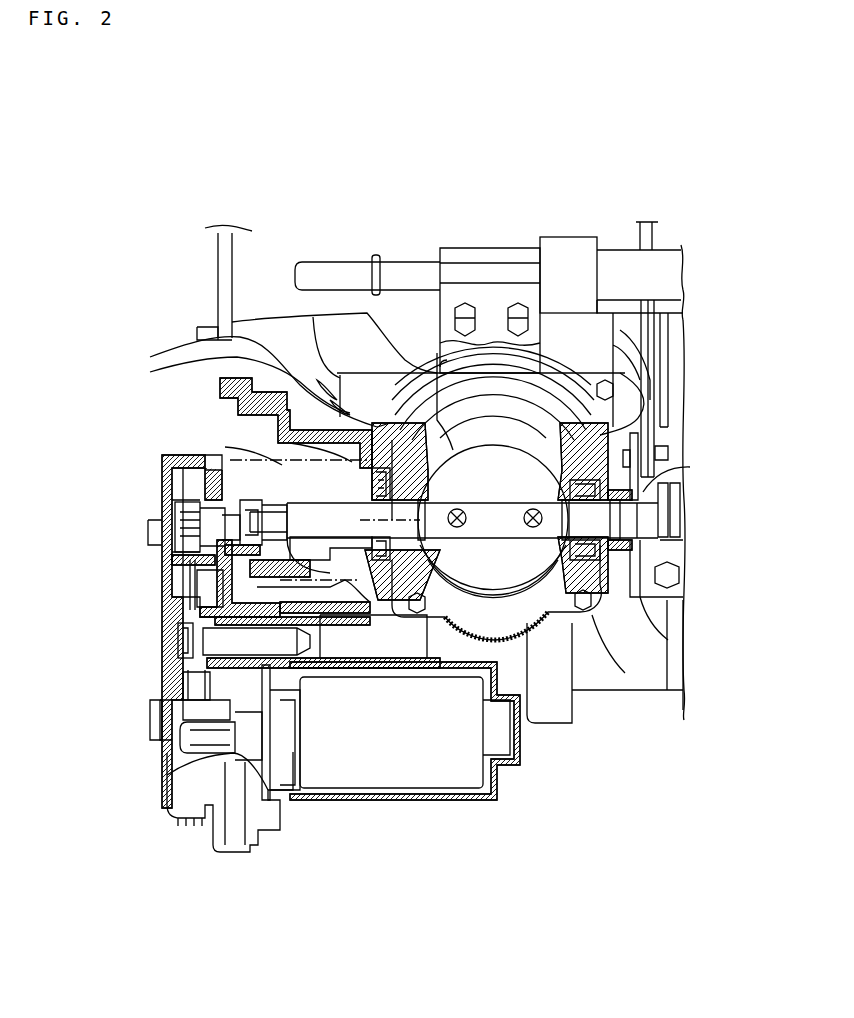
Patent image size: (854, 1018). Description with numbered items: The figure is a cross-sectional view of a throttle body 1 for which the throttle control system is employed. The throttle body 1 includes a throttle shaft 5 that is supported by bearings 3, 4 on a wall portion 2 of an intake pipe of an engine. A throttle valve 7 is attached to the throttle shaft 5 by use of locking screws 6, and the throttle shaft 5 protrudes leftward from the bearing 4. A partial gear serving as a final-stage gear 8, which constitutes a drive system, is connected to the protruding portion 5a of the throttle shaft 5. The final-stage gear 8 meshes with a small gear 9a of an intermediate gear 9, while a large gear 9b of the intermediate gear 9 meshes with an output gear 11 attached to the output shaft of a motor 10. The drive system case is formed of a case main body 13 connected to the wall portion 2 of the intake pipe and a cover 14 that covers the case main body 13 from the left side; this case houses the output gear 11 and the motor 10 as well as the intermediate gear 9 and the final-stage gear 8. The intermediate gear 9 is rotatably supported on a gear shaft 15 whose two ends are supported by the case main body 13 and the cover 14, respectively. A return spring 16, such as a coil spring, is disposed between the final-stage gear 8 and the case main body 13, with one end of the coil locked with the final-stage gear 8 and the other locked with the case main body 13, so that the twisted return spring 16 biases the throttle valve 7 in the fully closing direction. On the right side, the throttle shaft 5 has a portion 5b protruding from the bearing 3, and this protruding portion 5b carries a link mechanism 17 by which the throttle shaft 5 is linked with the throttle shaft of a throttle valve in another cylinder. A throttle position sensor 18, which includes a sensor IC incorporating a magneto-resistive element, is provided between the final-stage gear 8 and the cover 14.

The throttle body 1 is at (572, 190).
The wall portion 2 is at (390, 593).
The bearing 3 is at (600, 519).
The bearing 4 is at (373, 478).
The throttle shaft 5 is at (500, 545).
The protruding portion 5a is at (200, 549).
The protruding portion 5b is at (645, 480).
The locking screws 6 is at (530, 510).
The throttle valve 7 is at (455, 472).
The final-stage gear 8 is at (222, 595).
The intermediate gear 9 is at (62, 672).
The small gear 9a is at (210, 687).
The large gear 9b is at (205, 722).
The motor 10 is at (393, 770).
The output gear 11 is at (210, 760).
The case main body 13 is at (240, 348).
The cover 14 is at (163, 460).
The gear shaft 15 is at (212, 638).
The return spring 16 is at (245, 412).
The link mechanism 17 is at (672, 452).
The throttle position sensor 18 is at (190, 526).